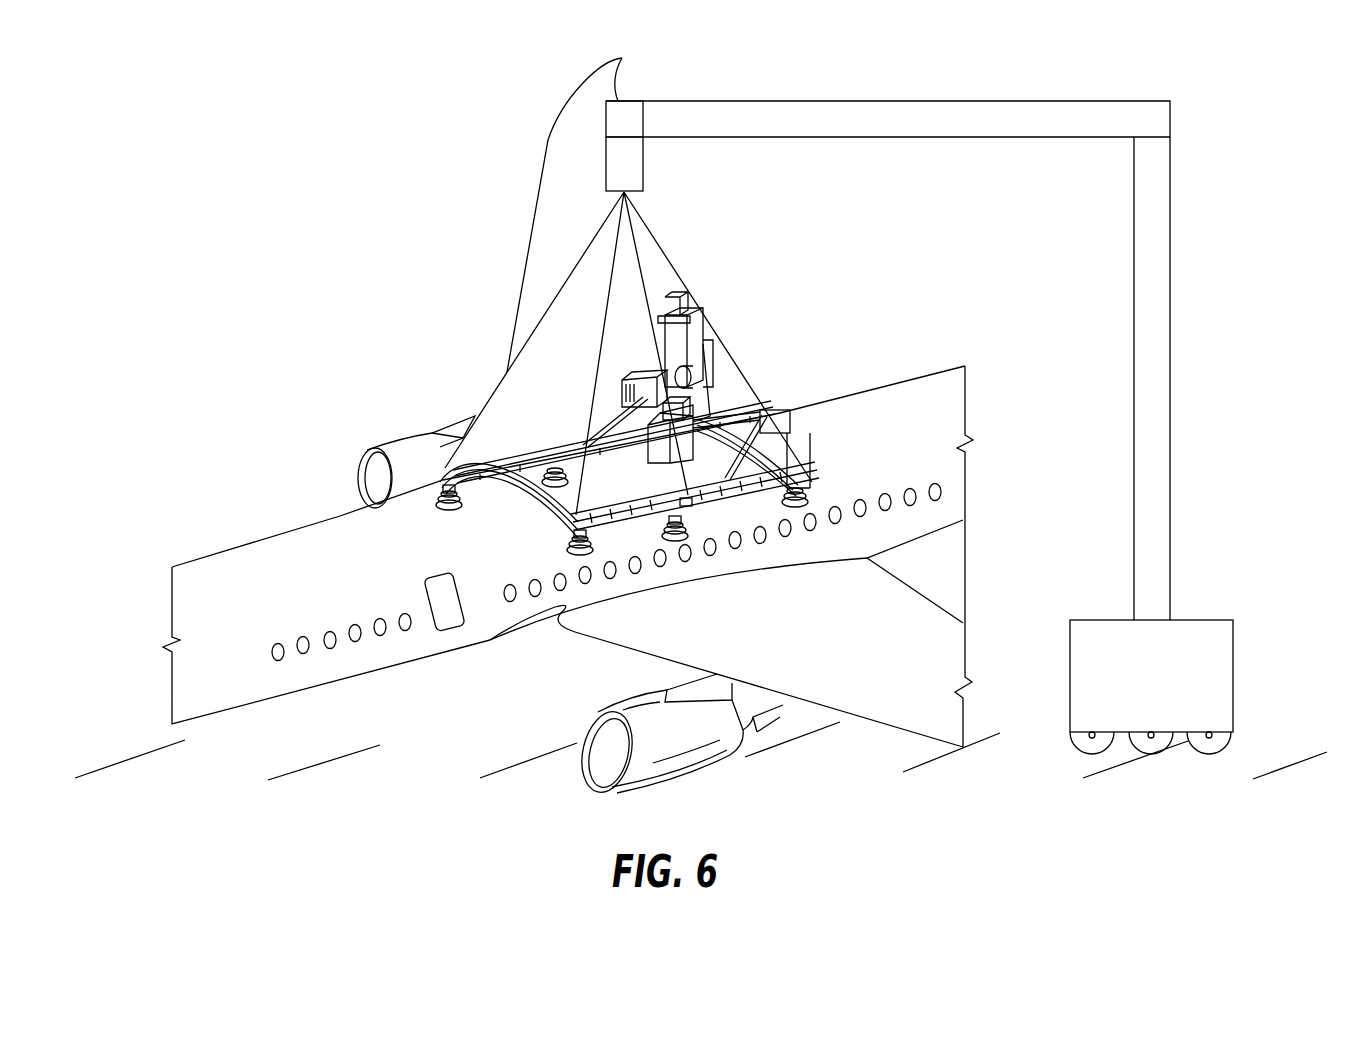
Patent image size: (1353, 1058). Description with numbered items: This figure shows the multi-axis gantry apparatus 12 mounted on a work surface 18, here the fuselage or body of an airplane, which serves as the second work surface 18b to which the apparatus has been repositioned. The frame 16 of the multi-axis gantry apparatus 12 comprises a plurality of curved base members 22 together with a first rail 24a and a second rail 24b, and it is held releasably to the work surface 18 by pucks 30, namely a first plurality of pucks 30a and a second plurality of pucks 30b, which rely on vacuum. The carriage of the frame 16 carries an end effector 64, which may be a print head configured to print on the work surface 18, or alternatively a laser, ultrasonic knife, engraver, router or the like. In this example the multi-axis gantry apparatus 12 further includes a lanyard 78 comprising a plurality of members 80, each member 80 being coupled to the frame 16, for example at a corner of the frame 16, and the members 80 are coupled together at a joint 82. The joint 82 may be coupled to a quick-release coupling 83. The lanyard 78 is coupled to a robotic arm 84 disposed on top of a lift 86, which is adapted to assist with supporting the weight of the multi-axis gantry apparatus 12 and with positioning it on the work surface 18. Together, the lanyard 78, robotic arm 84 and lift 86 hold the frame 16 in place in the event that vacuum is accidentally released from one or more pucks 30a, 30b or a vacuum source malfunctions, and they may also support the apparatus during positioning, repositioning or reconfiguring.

The multi-axis gantry apparatus 12 is at (748, 397).
The frame 16 is at (443, 462).
The work surface 18 is at (673, 393).
The second work surface 18b is at (580, 495).
The curved base members 22 is at (517, 493).
The first rail 24a is at (642, 522).
The second rail 24b is at (538, 456).
The pucks 30 is at (433, 513).
The first plurality of pucks 30a is at (580, 542).
The second plurality of pucks 30b is at (449, 497).
The end effector 64 is at (687, 493).
The lanyard 78 is at (677, 242).
The members 80 is at (646, 306).
The joint 82 is at (624, 165).
The quick-release coupling 83 is at (630, 122).
The robotic arm 84 is at (873, 118).
The lift 86 is at (1157, 347).